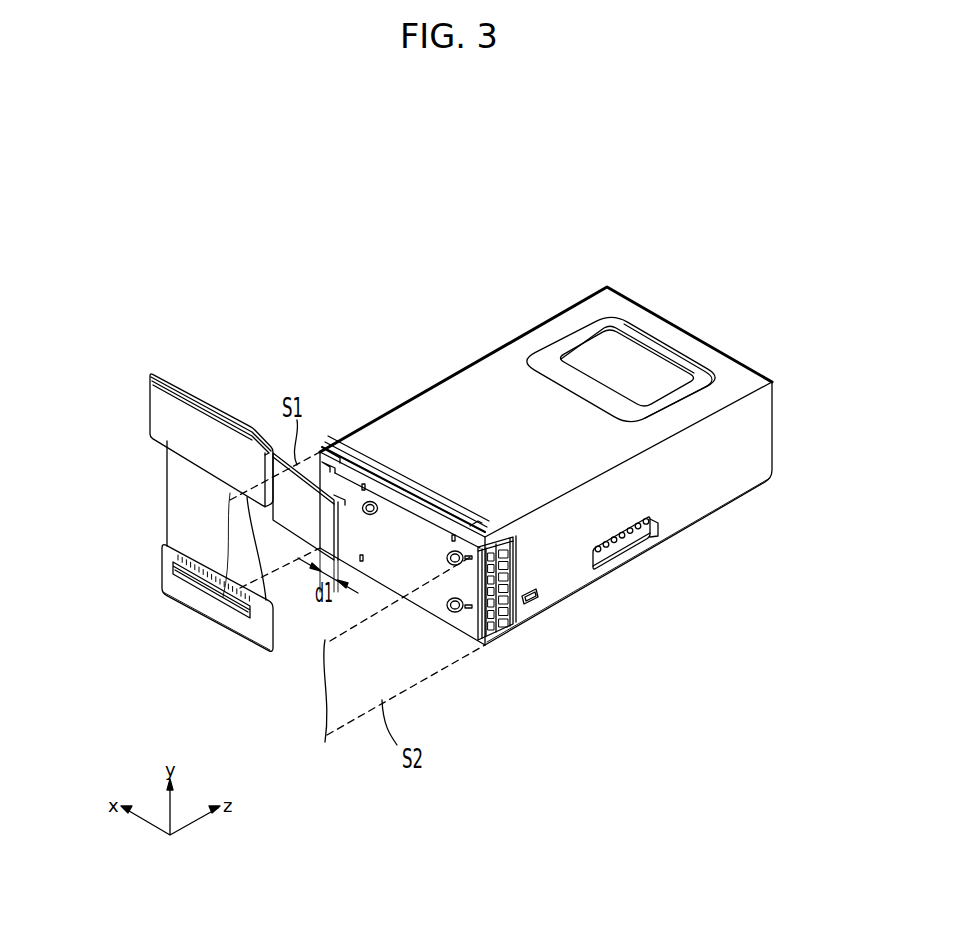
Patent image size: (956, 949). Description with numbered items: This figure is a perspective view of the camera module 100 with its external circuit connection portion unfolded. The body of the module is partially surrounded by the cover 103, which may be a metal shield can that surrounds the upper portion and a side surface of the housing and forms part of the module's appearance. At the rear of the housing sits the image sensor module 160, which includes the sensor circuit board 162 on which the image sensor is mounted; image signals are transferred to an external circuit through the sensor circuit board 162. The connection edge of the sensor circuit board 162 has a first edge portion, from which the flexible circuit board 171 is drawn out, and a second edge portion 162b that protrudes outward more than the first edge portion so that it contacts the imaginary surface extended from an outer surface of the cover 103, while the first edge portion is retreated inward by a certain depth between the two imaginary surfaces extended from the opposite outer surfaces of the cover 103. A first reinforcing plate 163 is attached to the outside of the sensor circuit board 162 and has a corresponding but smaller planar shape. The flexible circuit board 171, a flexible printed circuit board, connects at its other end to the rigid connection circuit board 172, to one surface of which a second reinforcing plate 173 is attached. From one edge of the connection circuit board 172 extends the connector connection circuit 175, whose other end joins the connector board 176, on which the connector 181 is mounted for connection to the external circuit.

The camera module 100 is at (573, 304).
The cover 103 is at (618, 445).
The image sensor module 160 is at (503, 650).
The sensor circuit board 162 is at (470, 512).
The second edge portion 162b is at (315, 460).
The first reinforcing plate 163 is at (438, 600).
The flexible circuit board 171 is at (298, 535).
The connection circuit board 172 is at (157, 373).
The second reinforcing plate 173 is at (150, 395).
The connector connection circuit 175 is at (170, 486).
The connector board 176 is at (180, 600).
The connector 181 is at (228, 607).